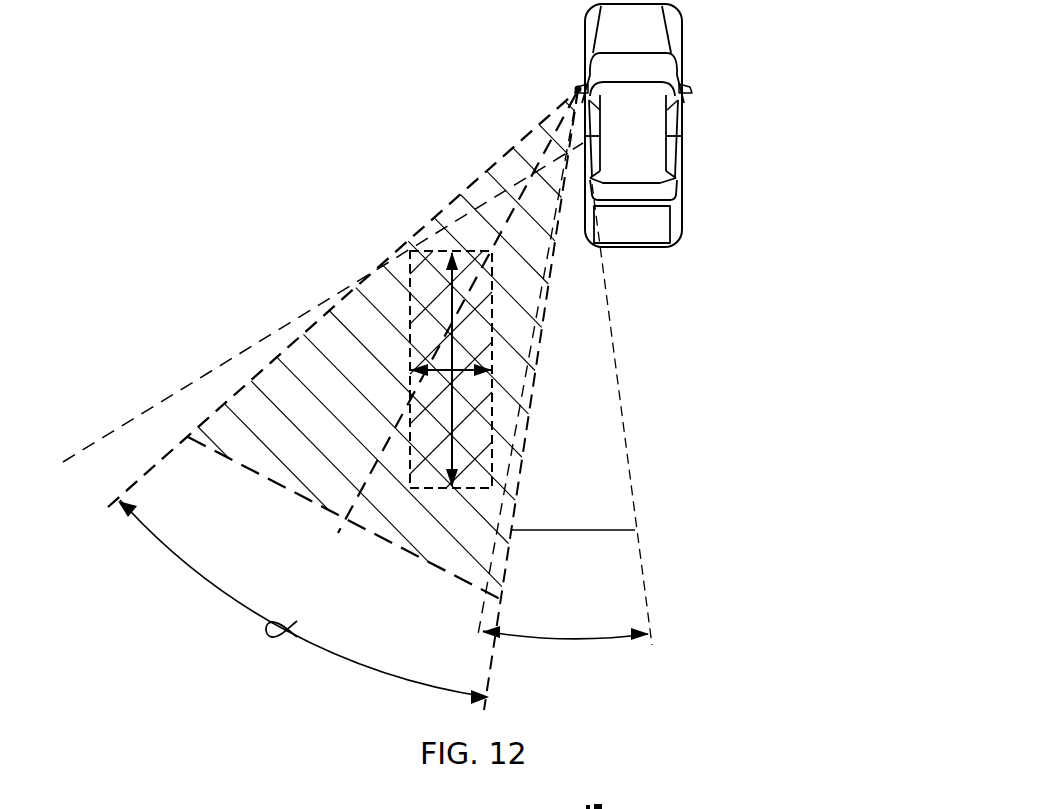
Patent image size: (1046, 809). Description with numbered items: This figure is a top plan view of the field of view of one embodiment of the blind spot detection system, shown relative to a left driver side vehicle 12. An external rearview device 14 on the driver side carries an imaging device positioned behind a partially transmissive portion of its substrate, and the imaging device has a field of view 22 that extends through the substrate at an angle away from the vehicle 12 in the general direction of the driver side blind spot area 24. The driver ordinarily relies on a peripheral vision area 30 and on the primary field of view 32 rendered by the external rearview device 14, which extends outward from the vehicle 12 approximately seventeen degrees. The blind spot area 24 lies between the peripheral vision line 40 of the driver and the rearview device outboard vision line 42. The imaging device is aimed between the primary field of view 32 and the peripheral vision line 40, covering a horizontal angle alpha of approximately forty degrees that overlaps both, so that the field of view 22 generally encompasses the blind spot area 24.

The vehicle 12 is at (712, 44).
The external rearview device 14 is at (572, 84).
The field of view 22 is at (219, 374).
The driver side blind spot area 24 is at (437, 247).
The peripheral vision area 30 is at (165, 321).
The primary field of view 32 is at (585, 591).
The peripheral vision line 40 is at (110, 433).
The rearview device outboard vision line 42 is at (483, 606).